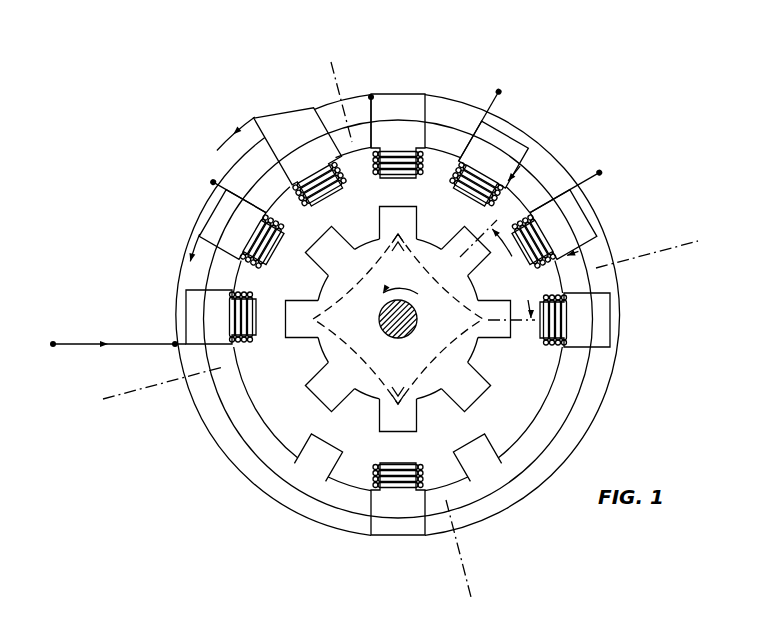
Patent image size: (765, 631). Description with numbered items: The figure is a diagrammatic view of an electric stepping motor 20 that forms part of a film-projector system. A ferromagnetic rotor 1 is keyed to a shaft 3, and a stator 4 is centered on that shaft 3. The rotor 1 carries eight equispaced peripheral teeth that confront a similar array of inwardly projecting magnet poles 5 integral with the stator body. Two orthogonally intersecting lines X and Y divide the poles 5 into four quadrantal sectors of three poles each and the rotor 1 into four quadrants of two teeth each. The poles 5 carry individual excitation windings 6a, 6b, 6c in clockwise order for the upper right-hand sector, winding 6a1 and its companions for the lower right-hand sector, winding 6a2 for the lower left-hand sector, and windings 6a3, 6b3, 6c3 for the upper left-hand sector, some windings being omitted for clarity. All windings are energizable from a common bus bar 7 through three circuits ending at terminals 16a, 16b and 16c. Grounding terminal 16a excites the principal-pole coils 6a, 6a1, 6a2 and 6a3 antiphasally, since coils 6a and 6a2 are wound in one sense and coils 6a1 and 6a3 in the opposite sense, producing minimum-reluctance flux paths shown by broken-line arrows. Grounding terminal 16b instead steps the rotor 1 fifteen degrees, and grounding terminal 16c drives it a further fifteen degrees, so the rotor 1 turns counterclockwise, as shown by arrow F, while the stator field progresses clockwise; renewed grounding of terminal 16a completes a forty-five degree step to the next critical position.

The rotor 1 is at (484, 373).
The shaft 3 is at (398, 338).
The stator 4 is at (520, 467).
The magnet poles 5 is at (536, 404).
The bus bar 7 is at (172, 350).
The motor 20 is at (208, 437).
The excitation winding 6a is at (398, 146).
The excitation winding 6b is at (483, 162).
The excitation winding 6c is at (548, 237).
The excitation winding 6a1 is at (567, 322).
The excitation winding 6a2 is at (400, 494).
The excitation winding 6a3 is at (231, 313).
The excitation winding 6b3 is at (248, 229).
The excitation winding 6c3 is at (303, 130).
The terminal 16a is at (376, 107).
The terminal 16b is at (488, 110).
The terminal 16c is at (585, 183).
The arrow F is at (398, 319).
The line X— X is at (392, 330).
The line Y— Y is at (394, 323).